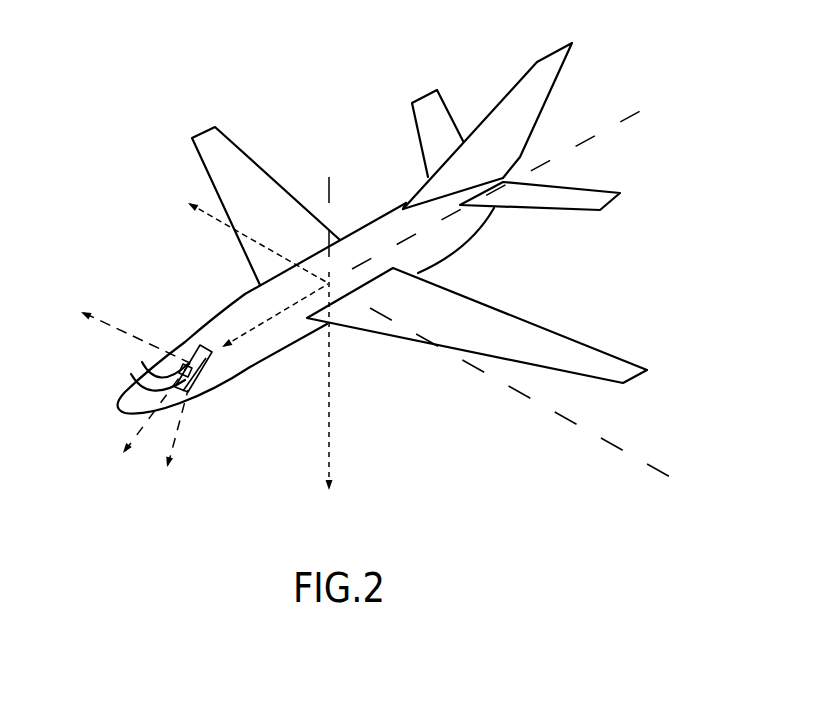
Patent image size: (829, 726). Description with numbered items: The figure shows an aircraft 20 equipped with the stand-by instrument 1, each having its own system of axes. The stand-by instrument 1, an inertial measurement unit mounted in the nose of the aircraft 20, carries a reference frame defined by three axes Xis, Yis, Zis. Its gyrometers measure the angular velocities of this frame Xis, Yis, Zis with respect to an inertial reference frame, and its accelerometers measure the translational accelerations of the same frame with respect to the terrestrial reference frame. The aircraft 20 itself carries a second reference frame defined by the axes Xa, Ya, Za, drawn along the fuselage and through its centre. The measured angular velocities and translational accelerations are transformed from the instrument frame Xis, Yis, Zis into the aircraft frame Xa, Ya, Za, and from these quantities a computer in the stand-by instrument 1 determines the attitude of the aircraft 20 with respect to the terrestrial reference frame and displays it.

The stand-by instrument 1 is at (200, 378).
The aircraft 20 is at (463, 243).
The X axis of the aircraft reference frame Xa is at (431, 230).
The Y axis of the aircraft reference frame Ya is at (423, 339).
The Z axis of the aircraft reference frame Za is at (347, 339).
The X axis of the stand-by instrument reference frame Xis is at (147, 426).
The Y axis of the stand-by instrument reference frame Yis is at (135, 325).
The Z axis of the stand-by instrument reference frame Zis is at (174, 445).